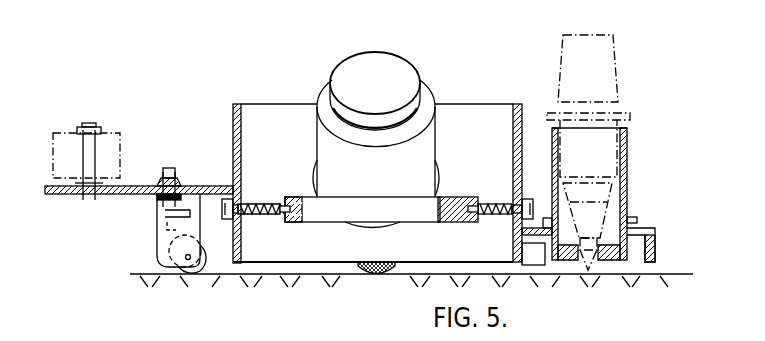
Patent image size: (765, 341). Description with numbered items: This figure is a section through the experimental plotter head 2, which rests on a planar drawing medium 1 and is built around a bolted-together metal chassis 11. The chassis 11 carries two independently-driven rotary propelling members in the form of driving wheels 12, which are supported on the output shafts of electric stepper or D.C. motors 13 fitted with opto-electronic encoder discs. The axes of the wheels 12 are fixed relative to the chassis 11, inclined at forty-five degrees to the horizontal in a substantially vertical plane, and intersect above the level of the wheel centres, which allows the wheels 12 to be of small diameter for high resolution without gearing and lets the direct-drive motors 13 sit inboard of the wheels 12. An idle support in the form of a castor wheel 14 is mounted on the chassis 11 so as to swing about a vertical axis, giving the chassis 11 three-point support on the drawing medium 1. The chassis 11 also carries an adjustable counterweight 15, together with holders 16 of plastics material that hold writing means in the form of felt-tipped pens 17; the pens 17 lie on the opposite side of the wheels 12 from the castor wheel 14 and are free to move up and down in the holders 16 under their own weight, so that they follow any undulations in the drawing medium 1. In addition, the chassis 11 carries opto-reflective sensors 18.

The planar drawing medium 1 is at (673, 273).
The plotter head 2 is at (231, 125).
The chassis 11 is at (655, 229).
The driving wheels 12 is at (374, 276).
The motors 13 is at (342, 79).
The castor wheel 14 is at (201, 277).
The counterweight 15 is at (62, 140).
The holders 16 is at (624, 177).
The felt-tipped pens 17 is at (597, 160).
The opto-reflective sensors 18 is at (537, 265).